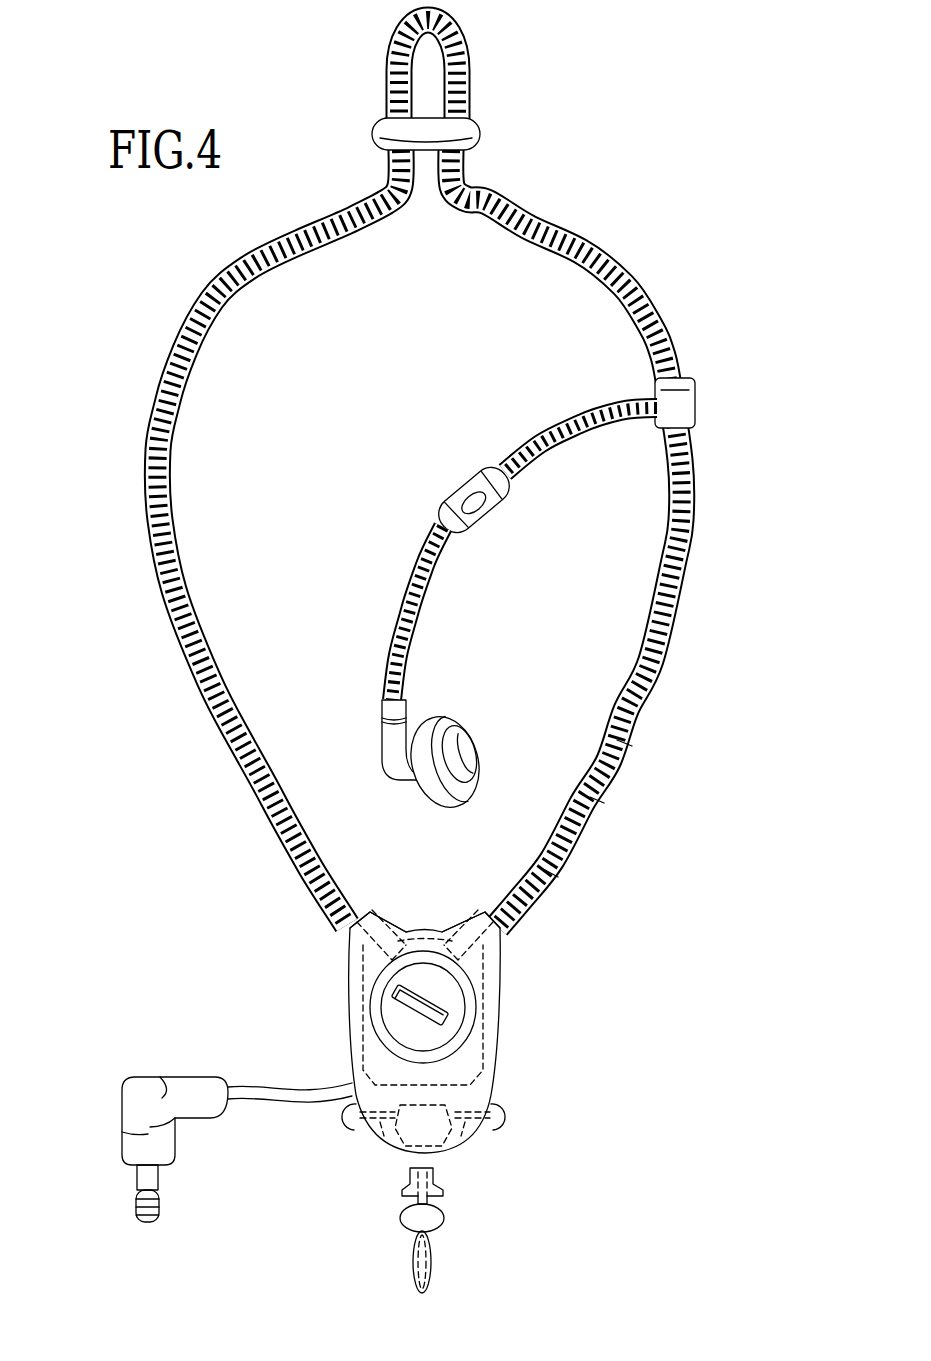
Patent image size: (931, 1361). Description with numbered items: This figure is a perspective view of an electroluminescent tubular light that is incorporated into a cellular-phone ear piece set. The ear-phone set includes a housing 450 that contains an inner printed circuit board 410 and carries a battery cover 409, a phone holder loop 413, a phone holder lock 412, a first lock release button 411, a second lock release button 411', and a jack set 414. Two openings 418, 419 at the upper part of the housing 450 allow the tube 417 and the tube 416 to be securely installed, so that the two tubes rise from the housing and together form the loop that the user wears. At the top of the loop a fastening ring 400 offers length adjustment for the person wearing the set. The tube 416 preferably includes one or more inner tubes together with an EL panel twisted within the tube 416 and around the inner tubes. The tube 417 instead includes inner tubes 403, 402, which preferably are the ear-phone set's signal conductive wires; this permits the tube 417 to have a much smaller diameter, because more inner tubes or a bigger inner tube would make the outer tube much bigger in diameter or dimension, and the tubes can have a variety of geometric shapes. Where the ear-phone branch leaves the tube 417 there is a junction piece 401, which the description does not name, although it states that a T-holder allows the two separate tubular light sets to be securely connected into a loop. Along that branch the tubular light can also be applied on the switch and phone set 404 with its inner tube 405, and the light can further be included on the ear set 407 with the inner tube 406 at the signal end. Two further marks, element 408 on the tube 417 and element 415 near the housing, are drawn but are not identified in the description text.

The fastening ring 400 is at (375, 122).
The connector junction 401 is at (695, 393).
The inner tube 402 is at (627, 678).
The inner tube 403 is at (617, 740).
The switch and phone set 404 is at (452, 480).
The inner tube 405 is at (592, 428).
The inner tube 406 is at (408, 592).
The ear set 407 is at (468, 718).
The strap end portion 408 is at (545, 870).
The battery cover 409 is at (405, 1012).
The inner printed circuit board 410 is at (490, 1052).
The first lock release button 411 is at (541, 1115).
The second lock release button 411' is at (309, 1127).
The phone holder lock 412 is at (440, 1175).
The phone holder loop 413 is at (432, 1250).
The jack set 414 is at (160, 1078).
The inner ring 415 is at (455, 1013).
The tube 416 is at (257, 795).
The tube 417 is at (590, 797).
The opening 418 is at (498, 935).
The opening 419 is at (352, 935).
The housing 450 is at (414, 928).